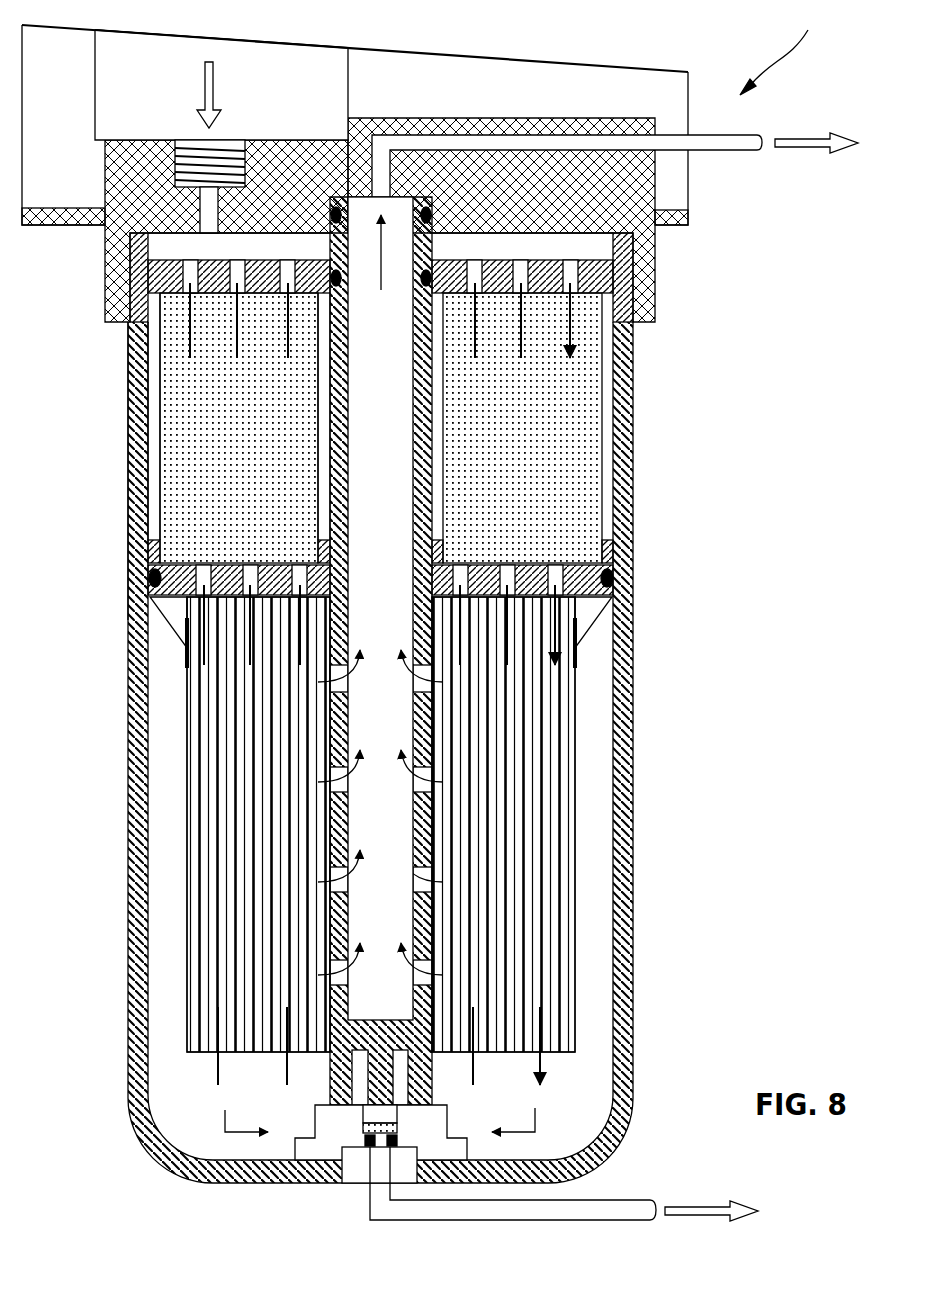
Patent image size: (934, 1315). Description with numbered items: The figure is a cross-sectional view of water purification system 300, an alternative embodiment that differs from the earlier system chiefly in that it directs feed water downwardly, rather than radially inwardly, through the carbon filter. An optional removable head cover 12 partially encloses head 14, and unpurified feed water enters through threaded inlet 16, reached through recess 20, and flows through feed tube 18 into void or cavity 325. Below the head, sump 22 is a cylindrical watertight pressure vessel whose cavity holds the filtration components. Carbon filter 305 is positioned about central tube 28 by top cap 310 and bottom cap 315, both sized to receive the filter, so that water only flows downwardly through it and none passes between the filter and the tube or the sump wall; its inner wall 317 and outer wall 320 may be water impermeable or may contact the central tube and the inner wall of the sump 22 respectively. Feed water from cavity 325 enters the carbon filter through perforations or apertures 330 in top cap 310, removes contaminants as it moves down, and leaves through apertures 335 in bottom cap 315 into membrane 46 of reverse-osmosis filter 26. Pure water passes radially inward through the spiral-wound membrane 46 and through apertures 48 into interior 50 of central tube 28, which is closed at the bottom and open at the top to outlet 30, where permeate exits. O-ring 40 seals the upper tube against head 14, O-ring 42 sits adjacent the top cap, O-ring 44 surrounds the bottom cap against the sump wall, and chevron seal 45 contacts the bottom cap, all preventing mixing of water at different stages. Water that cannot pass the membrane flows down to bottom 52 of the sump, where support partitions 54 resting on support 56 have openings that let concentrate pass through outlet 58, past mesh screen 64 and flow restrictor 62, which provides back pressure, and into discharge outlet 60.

The water purification system 300 is at (795, 55).
The head cover 12 is at (690, 167).
The head 14 is at (657, 293).
The threaded inlet 16 is at (178, 143).
The feed tube 18 is at (180, 200).
The recess 20 is at (348, 96).
The sump 22 is at (636, 468).
The reverse-osmosis filter 26 is at (575, 795).
The central tube 28 is at (330, 503).
The outlet 30 is at (722, 152).
The O-ring 40 is at (445, 202).
The O-ring 42 is at (440, 262).
The O-ring 44 is at (630, 578).
The chevron seal 45 is at (590, 622).
The membrane 46 is at (548, 845).
The apertures 48 is at (432, 887).
The interior 50 is at (385, 995).
The bottom 52 is at (567, 1125).
The support partitions 54 is at (330, 1083).
The support 56 is at (297, 1147).
The outlet 58 is at (370, 1112).
The discharge outlet 60 is at (622, 1202).
The flow restrictor 62 is at (367, 1143).
The mesh screen 64 is at (363, 1128).
The carbon filter 305 is at (185, 390).
The top cap 310 is at (128, 338).
The bottom cap 315 is at (607, 557).
The inner wall 317 is at (320, 360).
The outer wall 320 is at (158, 440).
The cavity 325 is at (128, 247).
The apertures 330 is at (530, 298).
The apertures 335 is at (555, 568).